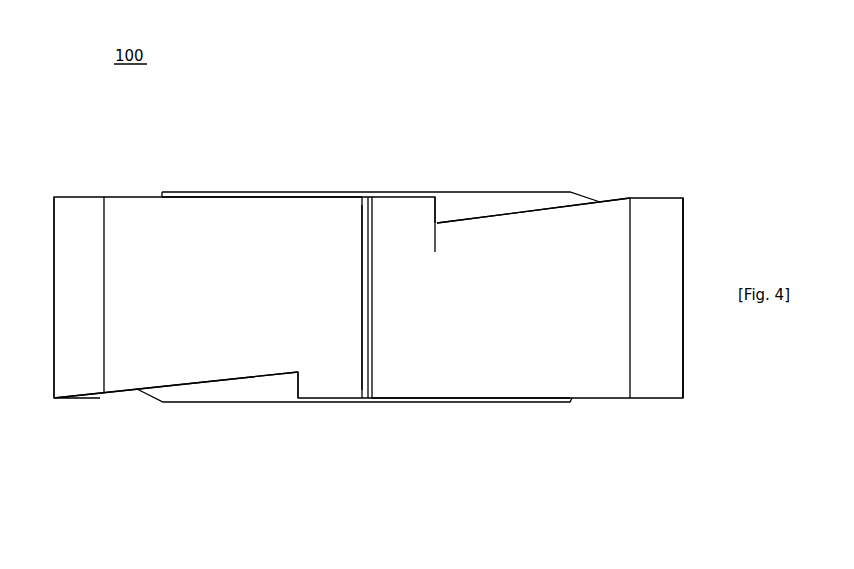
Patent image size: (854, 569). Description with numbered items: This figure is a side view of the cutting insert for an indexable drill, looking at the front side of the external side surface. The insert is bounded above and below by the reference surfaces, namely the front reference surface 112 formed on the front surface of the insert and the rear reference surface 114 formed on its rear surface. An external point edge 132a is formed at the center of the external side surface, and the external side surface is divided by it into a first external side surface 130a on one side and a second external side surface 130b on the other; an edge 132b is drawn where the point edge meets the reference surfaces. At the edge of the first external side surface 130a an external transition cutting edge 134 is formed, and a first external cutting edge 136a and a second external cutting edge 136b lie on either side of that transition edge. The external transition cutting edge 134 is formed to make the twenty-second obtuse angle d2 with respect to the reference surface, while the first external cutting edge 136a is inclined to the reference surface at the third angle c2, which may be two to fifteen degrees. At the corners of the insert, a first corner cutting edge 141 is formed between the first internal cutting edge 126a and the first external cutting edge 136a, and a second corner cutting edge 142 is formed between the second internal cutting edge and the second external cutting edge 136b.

The front reference surface 112 is at (272, 192).
The rear reference surface 114 is at (248, 403).
The first internal cutting edge 126a is at (683, 198).
The first external side surface 130a is at (204, 346).
The second external side surface 130b is at (469, 342).
The external point edge 132a is at (362, 292).
The slit edge 132b is at (362, 205).
The external transition cutting edge 134 is at (437, 215).
The first external cutting edge 136a is at (492, 218).
The second external cutting edge 136b is at (218, 197).
The first corner cutting edge 141 is at (70, 399).
The second corner cutting edge 142 is at (76, 196).
The twenty-second obtuse angle d2 is at (432, 251).
The third angle c2 is at (535, 237).